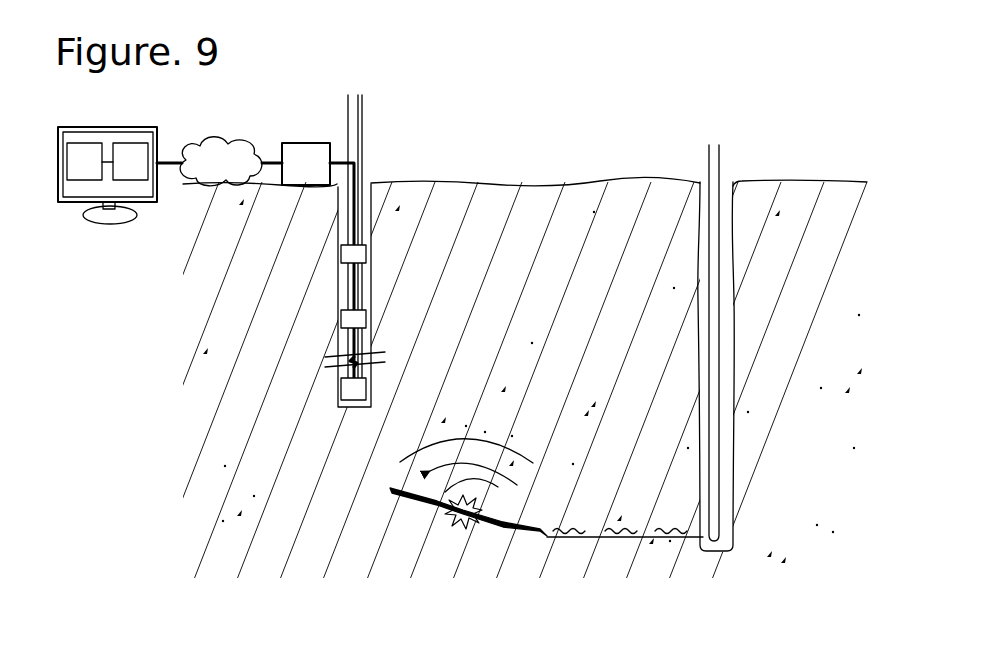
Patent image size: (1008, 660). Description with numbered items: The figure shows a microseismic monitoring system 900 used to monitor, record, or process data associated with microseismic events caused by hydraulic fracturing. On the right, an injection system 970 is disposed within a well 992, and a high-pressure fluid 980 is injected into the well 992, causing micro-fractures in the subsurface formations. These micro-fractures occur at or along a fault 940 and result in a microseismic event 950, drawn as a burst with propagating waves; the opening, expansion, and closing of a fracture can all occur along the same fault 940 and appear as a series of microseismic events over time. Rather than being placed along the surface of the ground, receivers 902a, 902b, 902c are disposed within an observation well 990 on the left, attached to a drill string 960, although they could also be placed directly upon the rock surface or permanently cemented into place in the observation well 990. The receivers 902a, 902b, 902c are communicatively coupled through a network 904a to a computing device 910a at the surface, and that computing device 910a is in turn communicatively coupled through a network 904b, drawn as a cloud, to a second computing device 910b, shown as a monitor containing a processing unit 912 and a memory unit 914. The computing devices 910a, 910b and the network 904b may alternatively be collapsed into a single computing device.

The microseismic monitoring system 900 is at (585, 110).
The computing device 910b is at (131, 152).
The processing unit 912 is at (84, 161).
The memory unit 914 is at (130, 161).
The network 904b is at (202, 173).
The computing device 910a is at (292, 175).
The network 904a is at (348, 160).
The drill string 960 is at (362, 132).
The observation well 990 is at (371, 268).
The receiver 902a is at (341, 250).
The receiver 902b is at (341, 316).
The receiver 902c is at (341, 386).
The injection system 970 is at (719, 166).
The well 992 is at (733, 346).
The microseismic event 950 is at (480, 510).
The fault 940 is at (520, 528).
The high-pressure fluid 980 is at (620, 538).